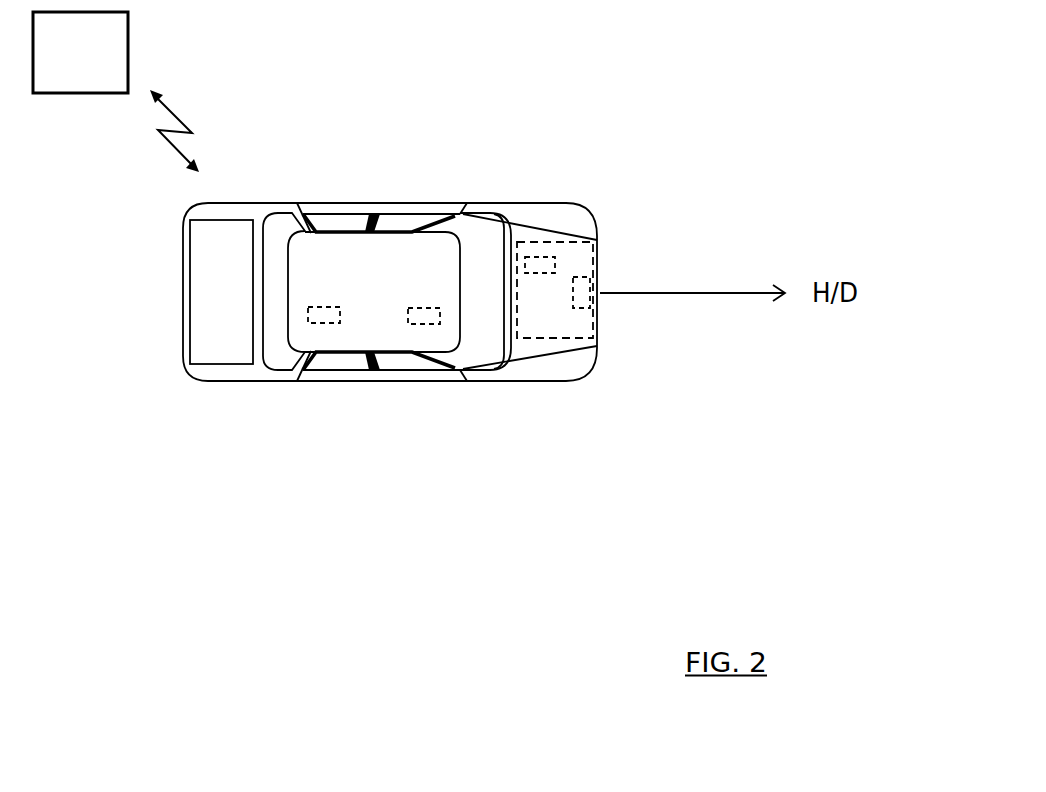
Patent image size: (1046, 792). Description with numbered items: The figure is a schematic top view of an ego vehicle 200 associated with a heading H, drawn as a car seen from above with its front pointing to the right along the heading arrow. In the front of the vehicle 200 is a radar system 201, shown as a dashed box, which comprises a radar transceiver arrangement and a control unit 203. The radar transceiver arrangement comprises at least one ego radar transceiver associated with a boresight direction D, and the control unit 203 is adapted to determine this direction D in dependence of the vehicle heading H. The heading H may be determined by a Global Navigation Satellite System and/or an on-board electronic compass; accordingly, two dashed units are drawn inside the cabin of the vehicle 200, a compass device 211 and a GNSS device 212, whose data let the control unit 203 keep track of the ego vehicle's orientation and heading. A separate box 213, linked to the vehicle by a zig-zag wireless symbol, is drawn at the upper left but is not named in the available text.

The ego vehicle 200 is at (396, 263).
The radar system 201 is at (547, 338).
The control unit 203 is at (540, 257).
The compass device 211 is at (325, 315).
The GNSS device 212 is at (423, 316).
The remote server 213 is at (80, 52).